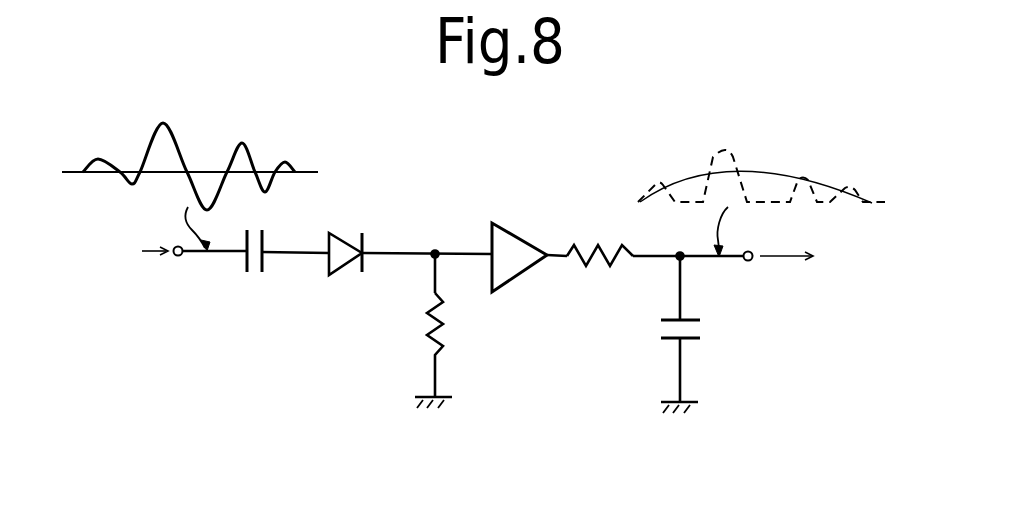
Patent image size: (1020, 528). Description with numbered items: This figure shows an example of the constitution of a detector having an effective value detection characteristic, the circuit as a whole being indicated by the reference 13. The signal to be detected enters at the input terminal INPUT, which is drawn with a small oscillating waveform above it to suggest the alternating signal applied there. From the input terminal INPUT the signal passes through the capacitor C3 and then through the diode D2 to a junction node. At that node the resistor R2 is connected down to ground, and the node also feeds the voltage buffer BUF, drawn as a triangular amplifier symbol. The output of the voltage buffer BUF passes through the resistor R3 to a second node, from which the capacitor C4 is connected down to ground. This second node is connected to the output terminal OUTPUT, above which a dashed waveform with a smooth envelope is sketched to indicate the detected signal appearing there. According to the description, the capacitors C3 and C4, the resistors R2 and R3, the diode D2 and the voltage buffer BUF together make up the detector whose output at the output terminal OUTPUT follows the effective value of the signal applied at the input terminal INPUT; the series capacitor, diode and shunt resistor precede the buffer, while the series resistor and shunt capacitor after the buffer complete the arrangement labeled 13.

The buffer amplifier circuit 13 is at (514, 216).
The voltage buffer BUF is at (520, 240).
The capacitor C3 is at (252, 276).
The diode D2 is at (346, 268).
The resistor R2 is at (438, 330).
The resistor R3 is at (592, 263).
The capacitor C4 is at (703, 333).
The input terminal INPUT is at (124, 251).
The output terminal OUTPUT is at (821, 257).